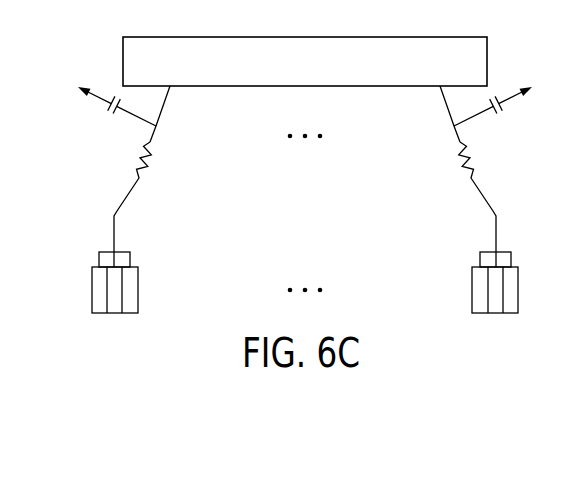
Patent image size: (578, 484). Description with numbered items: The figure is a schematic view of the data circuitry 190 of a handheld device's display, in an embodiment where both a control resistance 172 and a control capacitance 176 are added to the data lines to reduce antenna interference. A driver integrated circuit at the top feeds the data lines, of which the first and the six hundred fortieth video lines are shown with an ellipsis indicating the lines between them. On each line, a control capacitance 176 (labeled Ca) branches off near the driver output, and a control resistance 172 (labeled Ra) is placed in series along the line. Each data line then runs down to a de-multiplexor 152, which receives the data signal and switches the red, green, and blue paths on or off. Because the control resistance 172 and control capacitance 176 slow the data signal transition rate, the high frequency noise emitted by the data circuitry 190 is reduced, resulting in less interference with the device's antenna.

The data circuitry 190 is at (146, 23).
The control capacitance 176 is at (118, 98).
The control resistance 172 is at (131, 168).
The de-multiplexor 152 is at (92, 293).